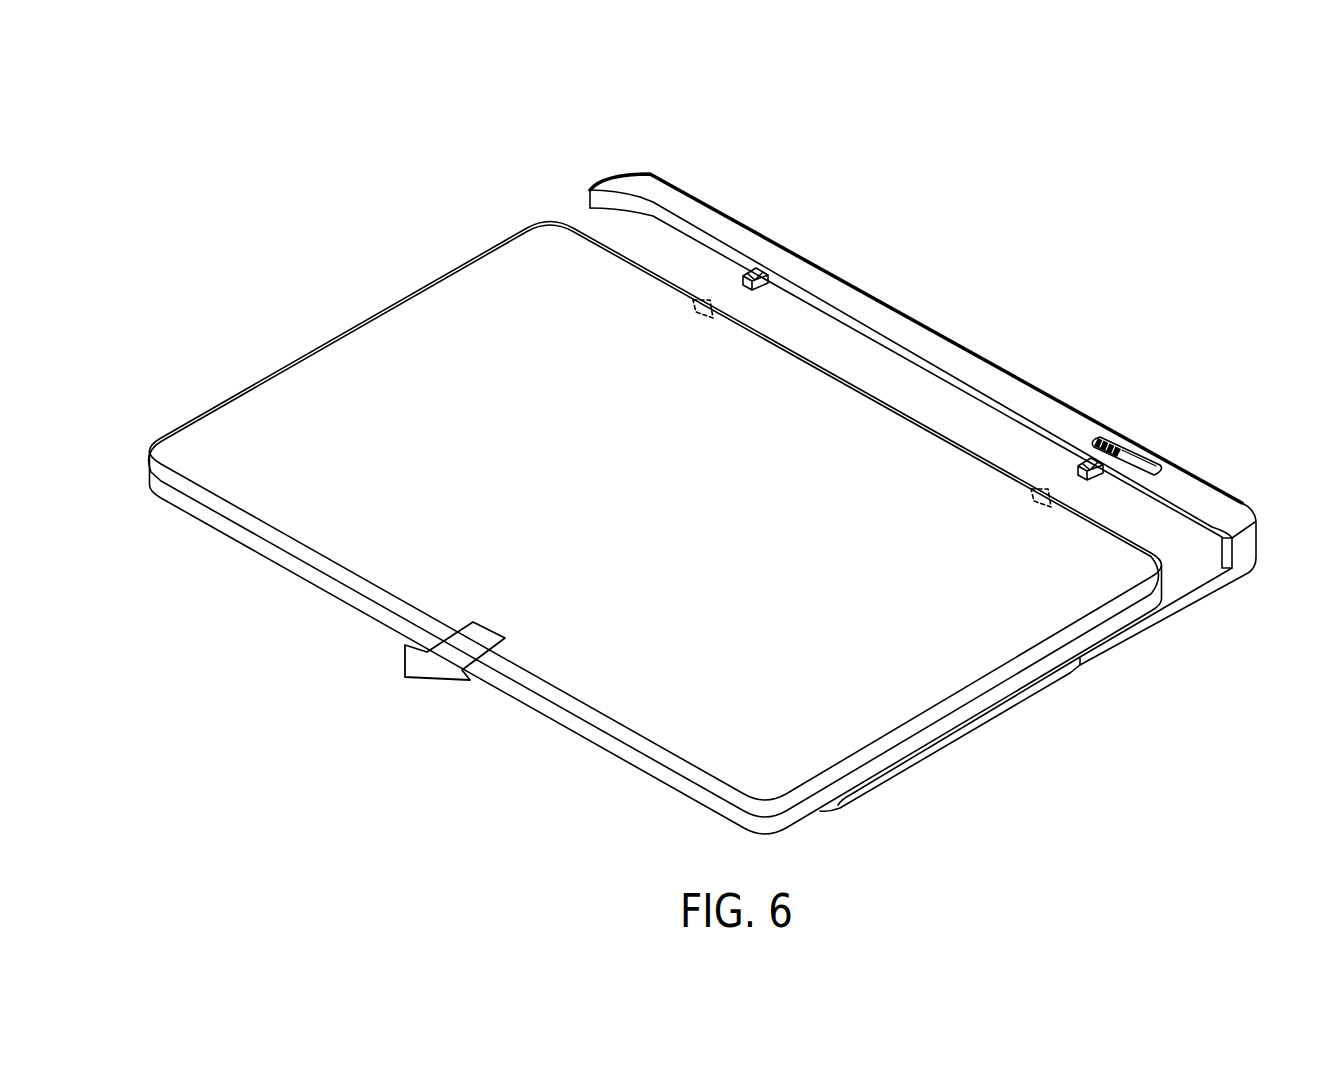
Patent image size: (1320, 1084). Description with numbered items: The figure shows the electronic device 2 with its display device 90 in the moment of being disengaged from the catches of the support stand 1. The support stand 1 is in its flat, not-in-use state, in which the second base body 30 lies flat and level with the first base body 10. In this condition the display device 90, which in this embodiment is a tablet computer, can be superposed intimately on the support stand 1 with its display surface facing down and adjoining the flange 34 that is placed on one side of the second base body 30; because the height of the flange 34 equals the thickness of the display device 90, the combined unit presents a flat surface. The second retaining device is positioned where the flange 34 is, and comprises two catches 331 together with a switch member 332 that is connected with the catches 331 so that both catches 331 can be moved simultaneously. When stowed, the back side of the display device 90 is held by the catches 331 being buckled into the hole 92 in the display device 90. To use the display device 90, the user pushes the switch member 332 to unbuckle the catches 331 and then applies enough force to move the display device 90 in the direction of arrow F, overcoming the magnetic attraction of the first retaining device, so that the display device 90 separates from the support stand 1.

The support stand 1 is at (1090, 686).
The electronic device 2 is at (210, 170).
The first base body 10 is at (980, 725).
The second base body 30 is at (1173, 610).
The flange 34 is at (920, 352).
The catches 331 is at (767, 268).
The switch member 332 is at (1128, 455).
The display device 90 is at (217, 423).
The hole 92 is at (700, 308).